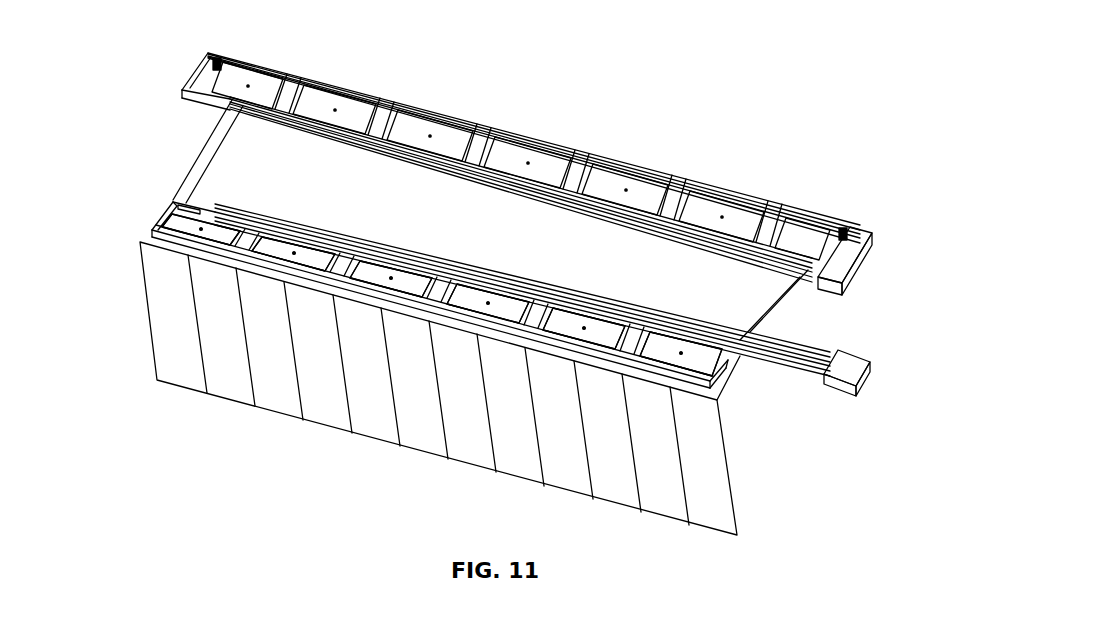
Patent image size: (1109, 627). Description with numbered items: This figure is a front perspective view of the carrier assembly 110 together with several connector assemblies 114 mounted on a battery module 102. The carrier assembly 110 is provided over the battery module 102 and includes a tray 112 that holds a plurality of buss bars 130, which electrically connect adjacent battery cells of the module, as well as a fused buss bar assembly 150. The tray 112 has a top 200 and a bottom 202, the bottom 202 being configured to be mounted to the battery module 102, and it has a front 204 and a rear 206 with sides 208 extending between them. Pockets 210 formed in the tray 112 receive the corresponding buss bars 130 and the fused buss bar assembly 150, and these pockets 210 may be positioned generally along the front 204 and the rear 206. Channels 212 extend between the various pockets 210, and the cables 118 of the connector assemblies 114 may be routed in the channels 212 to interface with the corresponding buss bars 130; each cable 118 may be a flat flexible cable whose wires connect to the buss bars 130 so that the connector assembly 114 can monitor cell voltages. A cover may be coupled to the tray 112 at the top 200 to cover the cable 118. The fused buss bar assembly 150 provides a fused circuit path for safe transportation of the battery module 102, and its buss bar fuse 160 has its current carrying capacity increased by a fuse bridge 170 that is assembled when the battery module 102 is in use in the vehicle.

The battery module 102 is at (662, 75).
The carrier assembly 110 is at (681, 180).
The tray 112 is at (586, 160).
The connector assembly 114 is at (852, 283).
The cable 118 is at (816, 364).
The buss bars 130 is at (248, 80).
The fused buss bar assembly 150 is at (840, 212).
The buss bar fuse 160 is at (800, 228).
The fuse bridge 170 is at (826, 226).
The top 200 is at (211, 167).
The bottom 202 is at (150, 242).
The front 204 is at (313, 285).
The rear 206 is at (488, 130).
The sides 208 is at (230, 135).
The pockets 210 is at (772, 215).
The channels 212 is at (202, 214).